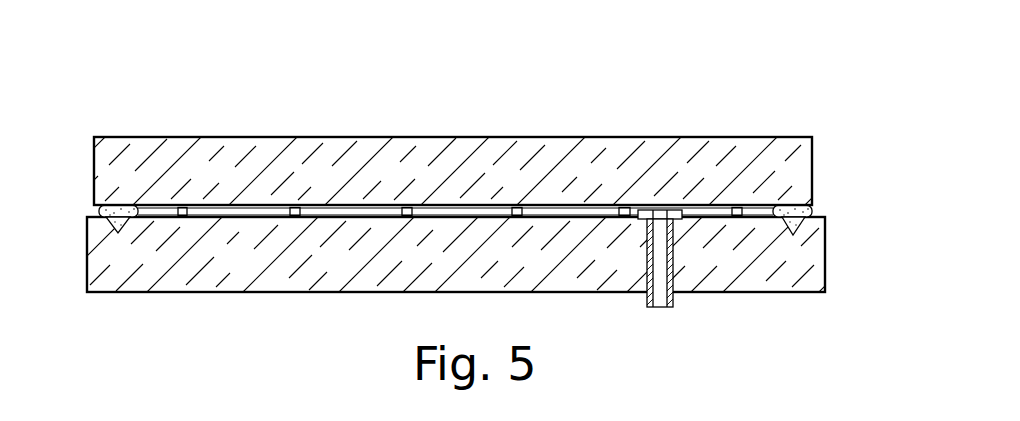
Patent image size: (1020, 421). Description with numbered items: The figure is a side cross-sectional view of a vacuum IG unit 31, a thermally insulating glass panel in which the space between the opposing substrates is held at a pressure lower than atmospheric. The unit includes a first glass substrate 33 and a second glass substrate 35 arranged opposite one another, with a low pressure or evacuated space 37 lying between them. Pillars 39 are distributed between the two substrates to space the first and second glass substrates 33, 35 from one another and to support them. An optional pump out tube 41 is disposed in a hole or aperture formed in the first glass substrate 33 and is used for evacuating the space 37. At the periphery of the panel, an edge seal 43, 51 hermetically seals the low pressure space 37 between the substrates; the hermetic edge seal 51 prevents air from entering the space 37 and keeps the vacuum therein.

The vacuum IG unit 31 is at (674, 62).
The first glass substrate 33 is at (364, 274).
The second glass substrate 35 is at (331, 138).
The low pressure or evacuated space 37 is at (492, 214).
The pillars 39 is at (404, 209).
The pump out tube 41 is at (671, 272).
The peripheral or edge seal 43 is at (80, 210).
The hermetic edge seal 51 is at (114, 222).